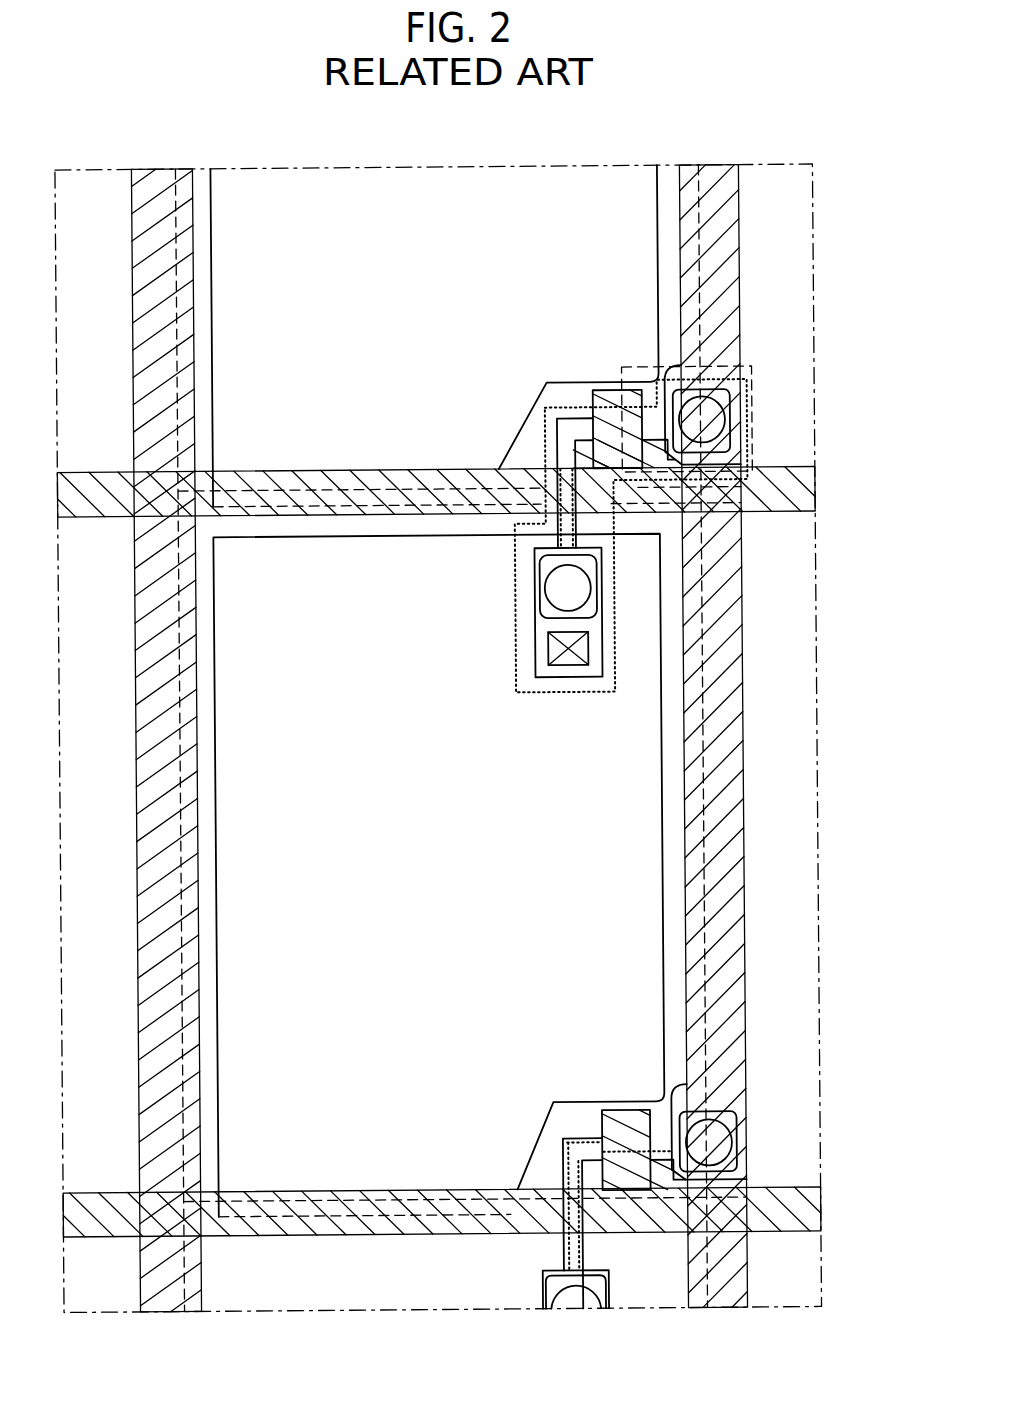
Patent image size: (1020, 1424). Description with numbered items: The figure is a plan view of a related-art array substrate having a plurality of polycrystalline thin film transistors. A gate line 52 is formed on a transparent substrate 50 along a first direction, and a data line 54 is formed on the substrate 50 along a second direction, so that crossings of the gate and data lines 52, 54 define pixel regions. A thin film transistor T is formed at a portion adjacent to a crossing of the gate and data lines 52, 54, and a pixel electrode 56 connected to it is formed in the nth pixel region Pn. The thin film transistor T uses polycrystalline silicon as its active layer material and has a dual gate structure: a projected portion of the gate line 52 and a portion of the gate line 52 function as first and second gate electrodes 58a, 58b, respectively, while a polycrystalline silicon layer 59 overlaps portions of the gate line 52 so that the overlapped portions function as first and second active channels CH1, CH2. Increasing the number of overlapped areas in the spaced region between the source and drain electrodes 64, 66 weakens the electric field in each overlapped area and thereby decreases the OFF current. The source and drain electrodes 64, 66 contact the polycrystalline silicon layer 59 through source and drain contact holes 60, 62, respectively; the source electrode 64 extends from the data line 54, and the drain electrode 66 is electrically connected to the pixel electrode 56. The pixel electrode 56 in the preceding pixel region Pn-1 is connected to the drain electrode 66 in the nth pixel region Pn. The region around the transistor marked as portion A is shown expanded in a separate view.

The transparent substrate 50 is at (822, 941).
The gate line 52 is at (806, 500).
The data line 54 is at (745, 652).
The pixel electrode 56 is at (667, 792).
The first gate electrode 58a is at (609, 386).
The second gate electrode 58b is at (559, 448).
The polycrystalline silicon layer 59 is at (756, 413).
The source contact hole 60 is at (736, 440).
The drain contact hole 62 is at (544, 589).
The source electrode 64 is at (660, 376).
The drain electrode 66 is at (597, 679).
The nth pixel region Pn is at (697, 249).
The (n-1)th pixel region Pn-1 is at (705, 717).
The portion A is at (756, 370).
The thin film transistor T is at (617, 572).
The first active channel CH1 is at (644, 1150).
The second active channel CH2 is at (570, 1192).